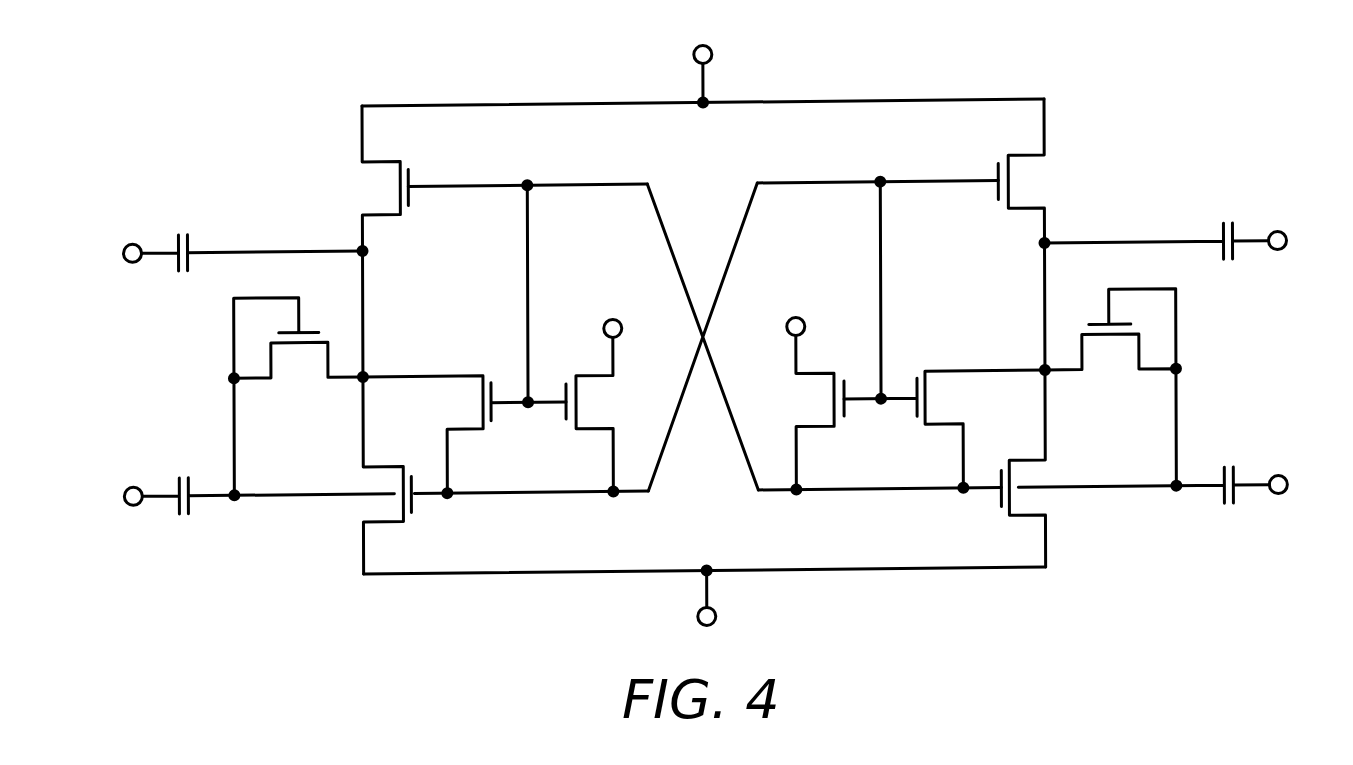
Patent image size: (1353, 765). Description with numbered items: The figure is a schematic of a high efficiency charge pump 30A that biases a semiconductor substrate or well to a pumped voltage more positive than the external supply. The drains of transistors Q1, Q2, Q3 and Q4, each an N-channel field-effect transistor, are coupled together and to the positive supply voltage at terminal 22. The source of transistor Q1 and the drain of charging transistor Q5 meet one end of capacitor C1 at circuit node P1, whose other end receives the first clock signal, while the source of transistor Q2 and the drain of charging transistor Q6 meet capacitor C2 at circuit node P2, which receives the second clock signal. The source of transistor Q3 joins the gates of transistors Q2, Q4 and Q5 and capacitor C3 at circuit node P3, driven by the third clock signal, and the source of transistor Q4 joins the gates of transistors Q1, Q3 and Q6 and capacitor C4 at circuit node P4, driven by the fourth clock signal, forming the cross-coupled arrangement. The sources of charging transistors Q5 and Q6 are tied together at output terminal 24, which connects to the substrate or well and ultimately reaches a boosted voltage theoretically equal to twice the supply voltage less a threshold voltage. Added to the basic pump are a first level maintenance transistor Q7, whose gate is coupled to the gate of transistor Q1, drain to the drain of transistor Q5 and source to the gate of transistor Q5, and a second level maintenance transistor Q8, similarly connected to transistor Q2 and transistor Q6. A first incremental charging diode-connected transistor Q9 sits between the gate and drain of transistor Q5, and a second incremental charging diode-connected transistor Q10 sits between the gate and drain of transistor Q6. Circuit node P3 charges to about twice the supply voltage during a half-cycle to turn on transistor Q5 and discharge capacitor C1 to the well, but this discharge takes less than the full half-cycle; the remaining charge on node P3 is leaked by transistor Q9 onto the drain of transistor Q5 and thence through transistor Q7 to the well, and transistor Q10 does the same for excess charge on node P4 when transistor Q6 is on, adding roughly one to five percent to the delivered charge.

The charge pump 30A is at (347, 100).
The terminal 22 is at (712, 61).
The output terminal 24 is at (714, 617).
The transistor Q1 is at (490, 177).
The transistor Q2 is at (914, 172).
The transistor Q3 is at (605, 385).
The transistor Q4 is at (805, 383).
The charging transistor Q5 is at (390, 475).
The charging transistor Q6 is at (1018, 469).
The first level maintenance transistor Q7 is at (464, 434).
The second level maintenance transistor Q8 is at (944, 429).
The first incremental charging diode-connected transistor Q9 is at (298, 398).
The second incremental charging diode-connected transistor Q10 is at (1110, 390).
The capacitor C1 is at (225, 237).
The capacitor C2 is at (1188, 225).
The capacitor C3 is at (242, 480).
The capacitor C4 is at (1175, 469).
The circuit node P1 is at (368, 251).
The circuit node P2 is at (1038, 250).
The circuit node P3 is at (446, 497).
The circuit node P4 is at (962, 497).